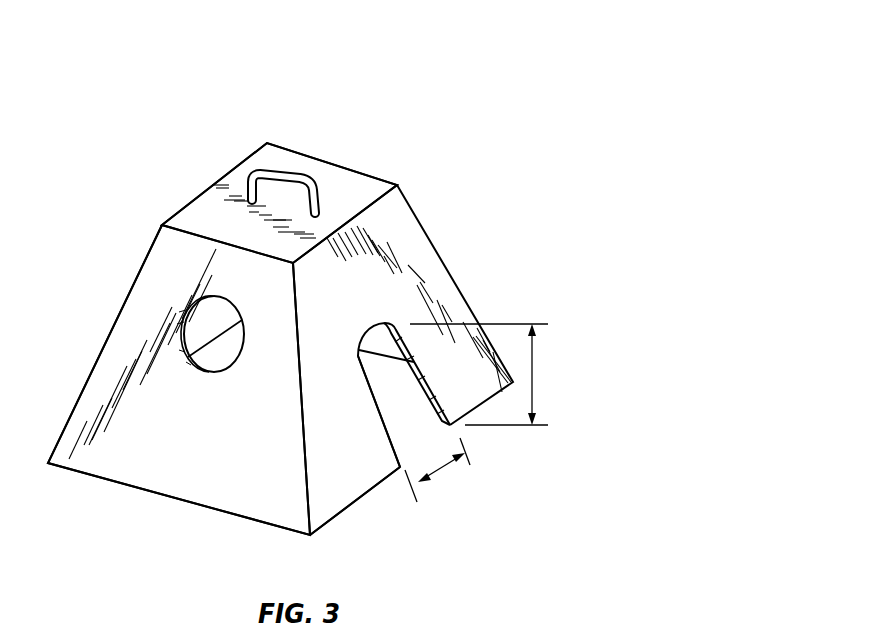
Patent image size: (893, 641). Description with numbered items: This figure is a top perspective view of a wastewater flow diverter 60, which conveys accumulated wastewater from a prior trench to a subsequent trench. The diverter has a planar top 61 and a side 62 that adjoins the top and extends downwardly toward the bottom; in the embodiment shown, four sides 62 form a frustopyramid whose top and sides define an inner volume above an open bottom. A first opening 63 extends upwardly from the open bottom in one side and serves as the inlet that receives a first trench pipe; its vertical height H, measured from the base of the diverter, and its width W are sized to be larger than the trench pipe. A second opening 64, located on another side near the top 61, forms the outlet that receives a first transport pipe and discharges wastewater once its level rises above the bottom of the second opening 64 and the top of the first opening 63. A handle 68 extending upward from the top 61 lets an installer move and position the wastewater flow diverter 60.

The wastewater flow diverter 60 is at (335, 92).
The top 61 is at (210, 215).
The side 62 is at (330, 487).
The first opening 63 is at (400, 320).
The second opening 64 is at (227, 345).
The handle 68 is at (270, 172).